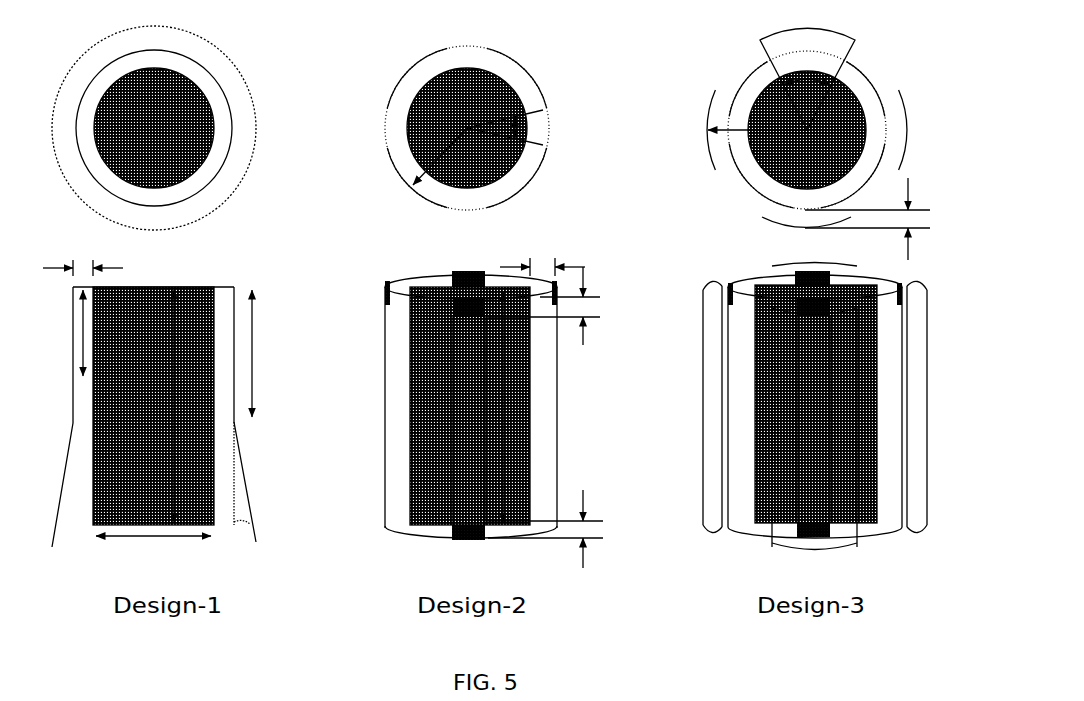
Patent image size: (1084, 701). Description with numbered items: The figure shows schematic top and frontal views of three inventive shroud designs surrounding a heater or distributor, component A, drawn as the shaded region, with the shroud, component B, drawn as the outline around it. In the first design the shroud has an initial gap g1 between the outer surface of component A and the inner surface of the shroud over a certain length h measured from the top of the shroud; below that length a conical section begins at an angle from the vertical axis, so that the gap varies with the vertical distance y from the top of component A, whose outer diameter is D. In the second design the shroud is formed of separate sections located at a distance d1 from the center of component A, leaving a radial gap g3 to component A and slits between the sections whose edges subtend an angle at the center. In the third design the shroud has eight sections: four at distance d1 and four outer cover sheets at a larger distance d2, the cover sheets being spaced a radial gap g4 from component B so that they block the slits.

The initial gap distance g1 is at (83, 256).
The vertical distance y is at (67, 333).
The length h is at (261, 353).
The diameter of component A D is at (153, 550).
The distance of shroud section from center of component A d1 is at (439, 156).
The radial distance from component A to component B g3 is at (542, 253).
The distance of outer shroud section from center of component A d2 is at (757, 149).
The radial distance from component B to cover sheet g4 is at (881, 219).